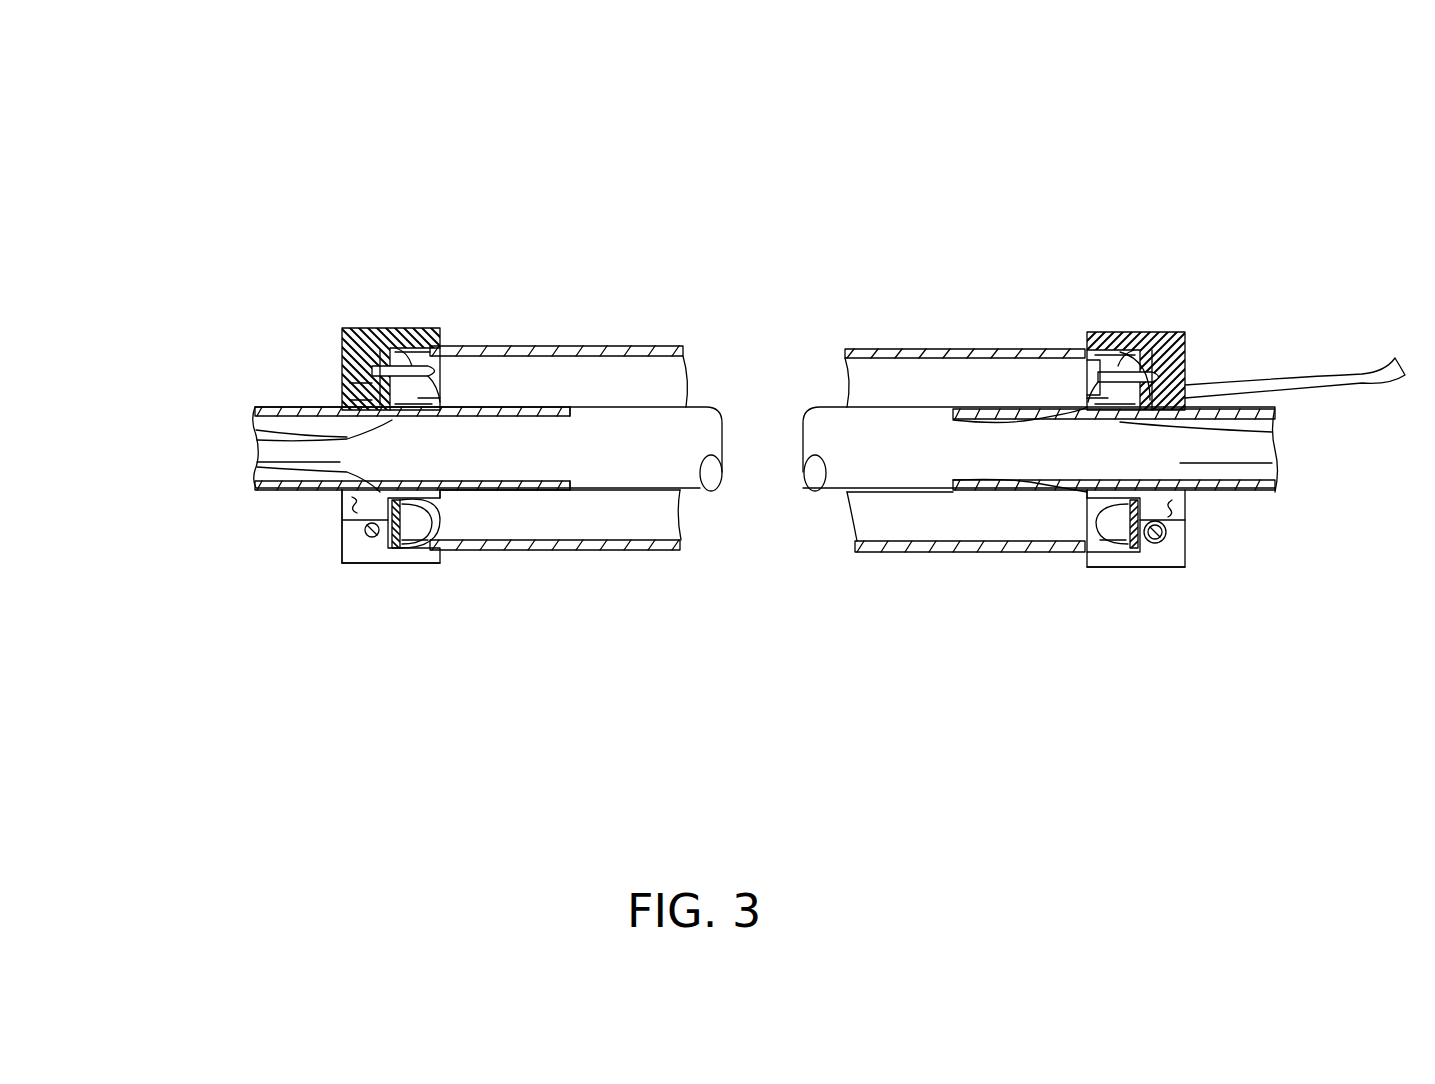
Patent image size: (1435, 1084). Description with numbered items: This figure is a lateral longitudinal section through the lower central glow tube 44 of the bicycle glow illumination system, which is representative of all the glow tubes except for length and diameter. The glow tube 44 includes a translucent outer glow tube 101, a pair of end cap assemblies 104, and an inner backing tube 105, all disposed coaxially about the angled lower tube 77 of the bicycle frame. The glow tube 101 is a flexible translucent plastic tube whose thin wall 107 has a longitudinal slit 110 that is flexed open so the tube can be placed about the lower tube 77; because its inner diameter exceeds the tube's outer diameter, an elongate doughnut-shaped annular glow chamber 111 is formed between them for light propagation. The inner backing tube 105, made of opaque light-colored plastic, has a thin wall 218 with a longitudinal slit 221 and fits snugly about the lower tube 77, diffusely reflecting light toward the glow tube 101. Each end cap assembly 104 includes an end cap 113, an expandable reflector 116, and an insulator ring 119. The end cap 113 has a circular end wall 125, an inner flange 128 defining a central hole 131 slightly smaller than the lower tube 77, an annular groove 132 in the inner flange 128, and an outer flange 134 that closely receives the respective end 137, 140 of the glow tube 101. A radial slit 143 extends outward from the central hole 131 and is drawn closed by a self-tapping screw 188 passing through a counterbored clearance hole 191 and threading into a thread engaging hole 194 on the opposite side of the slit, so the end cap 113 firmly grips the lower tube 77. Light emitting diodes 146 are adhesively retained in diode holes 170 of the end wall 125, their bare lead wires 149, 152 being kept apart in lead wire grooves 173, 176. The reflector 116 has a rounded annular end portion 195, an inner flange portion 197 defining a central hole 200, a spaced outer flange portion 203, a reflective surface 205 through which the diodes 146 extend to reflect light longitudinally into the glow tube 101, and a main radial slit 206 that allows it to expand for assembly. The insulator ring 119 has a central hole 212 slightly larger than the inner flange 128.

The lower central glow tube 44 is at (994, 180).
The angled lower tube 77 is at (1275, 432).
The translucent outer glow tube 101 is at (588, 340).
The end cap assembly 104 is at (400, 285).
The inner backing tube 105 is at (886, 406).
The wall 107 is at (868, 347).
The longitudinal slit 110 is at (606, 552).
The annular glow chamber 111 is at (556, 516).
The end cap 113 is at (383, 566).
The expandable reflector 116 is at (449, 312).
The insulator ring 119 is at (388, 335).
The circular end wall 125 is at (338, 520).
The inner flange 128 is at (583, 483).
The central hole 131 is at (259, 463).
The annular groove 132 is at (440, 405).
The outer flange 134 is at (373, 566).
The end 137 is at (371, 566).
The end 140 is at (1150, 335).
The radial slit 143 is at (345, 502).
The light emitting diode 146 is at (1074, 350).
The bare lead wire 149 is at (1190, 352).
The bare lead wire 152 is at (343, 403).
The diode hole 170 is at (343, 341).
The lead wire groove 173 is at (1170, 336).
The lead wire groove 176 is at (333, 383).
The self-tapping screw 188 is at (366, 536).
The counterbored clearance hole 191 is at (1162, 542).
The thread engaging hole 194 is at (392, 500).
The annular end portion 195 is at (1068, 560).
The inner flange portion 197 is at (440, 505).
The central hole 200 is at (432, 496).
The outer flange portion 203 is at (396, 568).
The reflective surface 205 is at (447, 392).
The main radial slit 206 is at (358, 565).
The central hole 212 is at (257, 430).
The wall 218 is at (672, 456).
The longitudinal slit 221 is at (562, 490).